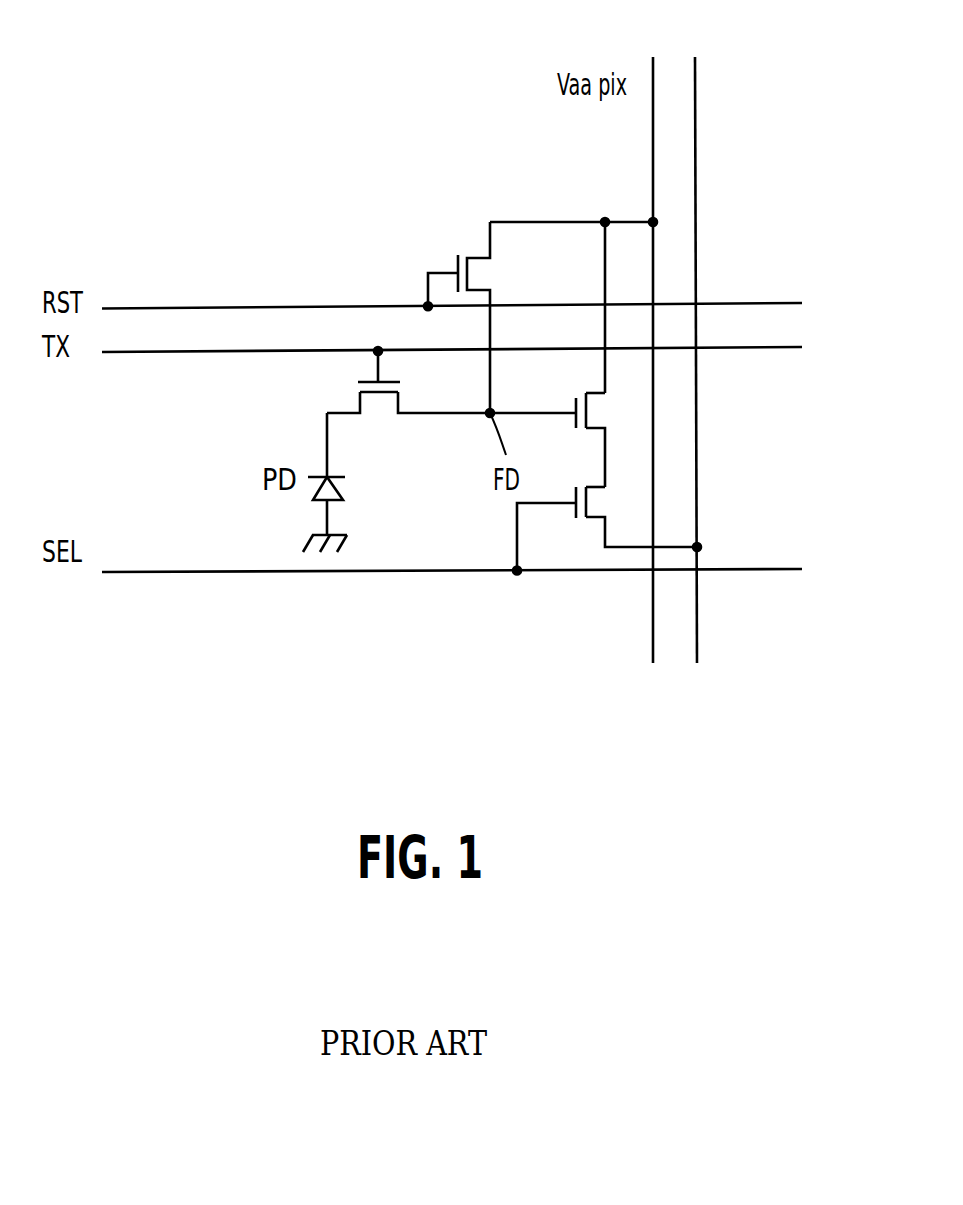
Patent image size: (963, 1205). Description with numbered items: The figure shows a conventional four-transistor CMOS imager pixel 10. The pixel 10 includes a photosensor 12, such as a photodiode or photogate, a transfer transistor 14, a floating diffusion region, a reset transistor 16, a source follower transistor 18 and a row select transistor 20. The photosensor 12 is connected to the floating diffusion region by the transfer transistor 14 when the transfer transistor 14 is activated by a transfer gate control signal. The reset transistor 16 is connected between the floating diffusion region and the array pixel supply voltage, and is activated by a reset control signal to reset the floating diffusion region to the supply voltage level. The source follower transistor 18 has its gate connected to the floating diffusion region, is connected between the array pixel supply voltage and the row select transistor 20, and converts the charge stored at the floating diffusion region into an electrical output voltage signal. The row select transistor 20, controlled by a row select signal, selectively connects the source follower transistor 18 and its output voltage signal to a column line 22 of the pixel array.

The CMOS imager pixel 10 is at (180, 97).
The photosensor 12 is at (338, 490).
The transfer transistor 14 is at (357, 403).
The reset transistor 16 is at (477, 255).
The source follower transistor 18 is at (592, 396).
The row select transistor 20 is at (592, 490).
The column line 22 is at (698, 618).